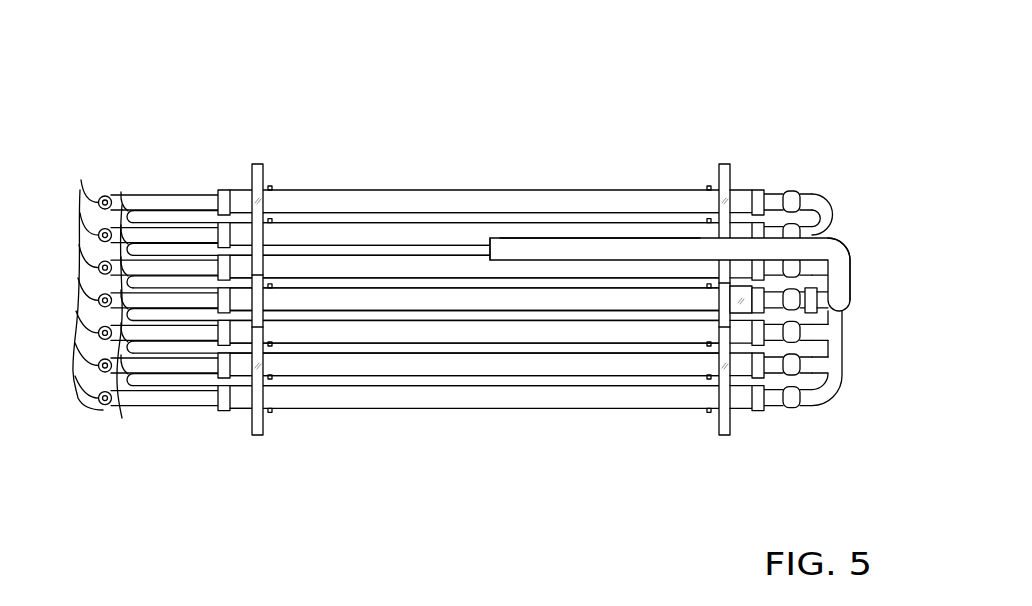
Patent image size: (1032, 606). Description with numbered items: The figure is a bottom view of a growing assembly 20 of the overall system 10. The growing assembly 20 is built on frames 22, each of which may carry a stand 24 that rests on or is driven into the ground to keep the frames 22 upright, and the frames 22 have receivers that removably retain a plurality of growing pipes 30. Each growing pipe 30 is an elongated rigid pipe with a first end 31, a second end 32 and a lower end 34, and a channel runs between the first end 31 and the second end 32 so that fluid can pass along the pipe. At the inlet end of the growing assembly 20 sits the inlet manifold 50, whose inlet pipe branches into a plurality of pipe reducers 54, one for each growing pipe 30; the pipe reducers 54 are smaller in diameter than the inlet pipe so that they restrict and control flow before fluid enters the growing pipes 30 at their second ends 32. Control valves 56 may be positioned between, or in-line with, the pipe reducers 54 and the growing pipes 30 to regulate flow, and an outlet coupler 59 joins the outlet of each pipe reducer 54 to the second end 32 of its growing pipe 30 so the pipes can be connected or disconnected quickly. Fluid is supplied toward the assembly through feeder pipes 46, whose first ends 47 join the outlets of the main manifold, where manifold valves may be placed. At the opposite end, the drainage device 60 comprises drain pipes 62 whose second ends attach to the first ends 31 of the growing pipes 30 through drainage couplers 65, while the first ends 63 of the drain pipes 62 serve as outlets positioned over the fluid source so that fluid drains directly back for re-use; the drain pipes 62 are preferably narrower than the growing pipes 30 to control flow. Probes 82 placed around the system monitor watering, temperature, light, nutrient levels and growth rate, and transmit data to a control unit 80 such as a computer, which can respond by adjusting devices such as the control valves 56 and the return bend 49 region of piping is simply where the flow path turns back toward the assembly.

The heat exchanger assembly 10 is at (164, 60).
The growing assembly 20 is at (357, 179).
The frame 22 is at (260, 163).
The stand 24 is at (725, 282).
The growing pipe 30 is at (490, 409).
The first end 31 is at (240, 409).
The second end 32 is at (740, 411).
The lower end 34 is at (522, 395).
The feeder pipe 46 is at (560, 237).
The first end 47 is at (491, 241).
The return bend 49 is at (850, 262).
The inlet manifold 50 is at (767, 178).
The pipe reducer 54 is at (832, 221).
The control valve 56 is at (795, 192).
The outlet coupler 59 is at (746, 207).
The drainage device 60 is at (175, 414).
The drain pipe 62 is at (122, 418).
The first end 63 is at (80, 190).
The drainage coupler 65 is at (225, 189).
The control unit 80 is at (733, 296).
The probe 82 is at (272, 187).